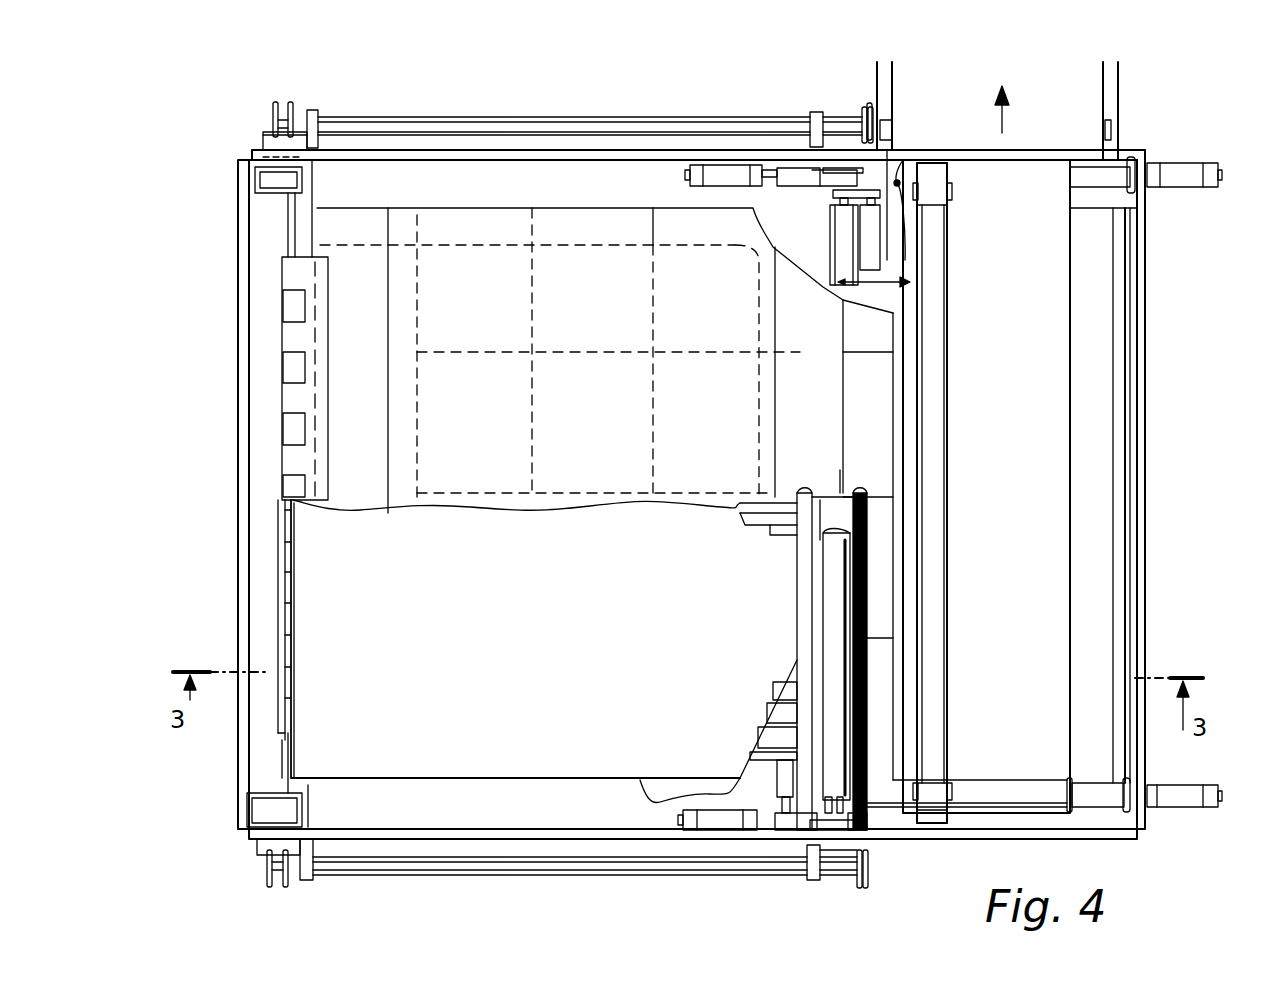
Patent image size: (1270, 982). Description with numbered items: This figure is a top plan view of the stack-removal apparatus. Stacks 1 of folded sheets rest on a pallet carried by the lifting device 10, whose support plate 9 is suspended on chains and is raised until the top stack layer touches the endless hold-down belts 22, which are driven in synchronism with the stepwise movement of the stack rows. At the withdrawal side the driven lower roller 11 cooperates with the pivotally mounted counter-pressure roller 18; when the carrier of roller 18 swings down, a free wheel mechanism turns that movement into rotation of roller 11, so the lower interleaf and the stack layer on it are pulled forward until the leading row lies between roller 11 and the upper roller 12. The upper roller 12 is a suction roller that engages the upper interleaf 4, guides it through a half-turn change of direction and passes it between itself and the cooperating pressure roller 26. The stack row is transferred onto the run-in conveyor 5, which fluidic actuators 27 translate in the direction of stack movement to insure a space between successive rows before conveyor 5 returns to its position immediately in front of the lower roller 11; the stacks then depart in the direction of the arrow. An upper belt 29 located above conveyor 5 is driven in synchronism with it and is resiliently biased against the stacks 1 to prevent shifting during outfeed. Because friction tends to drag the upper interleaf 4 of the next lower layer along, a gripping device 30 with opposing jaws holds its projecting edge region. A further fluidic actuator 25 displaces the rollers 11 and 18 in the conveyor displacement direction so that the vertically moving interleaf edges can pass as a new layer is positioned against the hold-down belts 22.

The stack of folded sheets of paper 1 is at (807, 250).
The upper interleaf 4 is at (366, 314).
The run-in conveyor 5 is at (1055, 330).
The support plate 9 is at (427, 145).
The lifting device 10 is at (538, 110).
The lower roller 11 is at (860, 272).
The upper roller 12 is at (843, 513).
The counter-pressure roller 18 is at (873, 233).
The hold-down belts 22 is at (770, 757).
The fluidic actuator 25 is at (720, 170).
The pressure roller 26 is at (837, 572).
The fluidic actuators 27 is at (1188, 170).
The upper belt 29 is at (928, 792).
The gripping device 30 is at (298, 342).